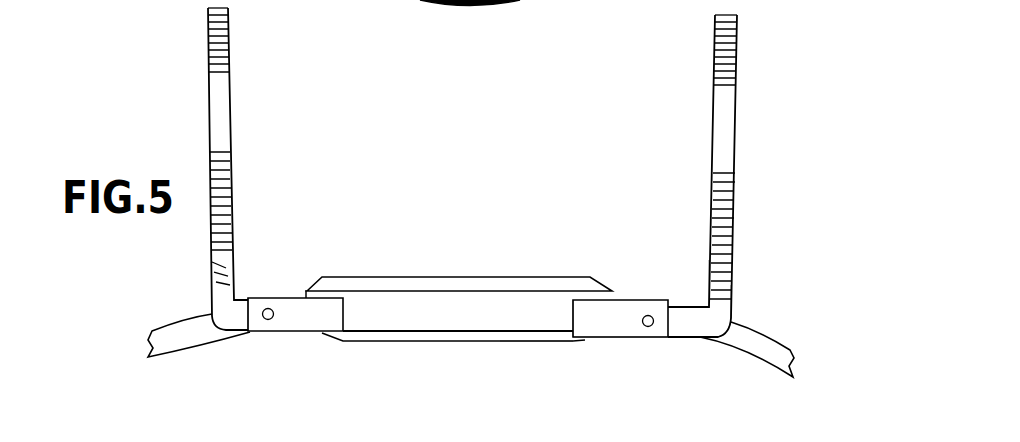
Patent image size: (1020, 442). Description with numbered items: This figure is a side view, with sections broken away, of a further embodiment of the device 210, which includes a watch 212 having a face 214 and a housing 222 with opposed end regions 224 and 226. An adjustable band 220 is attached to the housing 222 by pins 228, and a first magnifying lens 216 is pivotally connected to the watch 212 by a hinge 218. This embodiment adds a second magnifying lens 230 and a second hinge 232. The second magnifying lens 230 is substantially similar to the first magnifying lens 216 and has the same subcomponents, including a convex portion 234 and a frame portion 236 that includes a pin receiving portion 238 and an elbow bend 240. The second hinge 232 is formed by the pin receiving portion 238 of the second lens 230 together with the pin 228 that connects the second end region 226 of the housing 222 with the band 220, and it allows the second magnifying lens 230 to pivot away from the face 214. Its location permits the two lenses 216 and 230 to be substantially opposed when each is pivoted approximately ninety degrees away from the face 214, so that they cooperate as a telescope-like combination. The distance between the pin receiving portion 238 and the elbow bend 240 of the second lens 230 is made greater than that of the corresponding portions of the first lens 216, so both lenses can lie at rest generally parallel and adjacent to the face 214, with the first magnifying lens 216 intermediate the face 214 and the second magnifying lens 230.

The device 210 is at (483, 307).
The watch 212 is at (516, 342).
The face 214 is at (477, 277).
The magnifying lens 216 is at (229, 112).
The hinge 218 is at (262, 297).
The adjustable band 220 is at (185, 310).
The housing 222 is at (548, 343).
The end region 224 is at (288, 295).
The second end region 226 is at (625, 342).
The pins 228 is at (678, 368).
The second magnifying lens 230 is at (736, 118).
The second hinge 232 is at (643, 299).
The convex portion 234 is at (735, 160).
The frame portion 236 is at (735, 290).
The pin receiving portion 238 is at (677, 300).
The elbow bend 240 is at (747, 328).